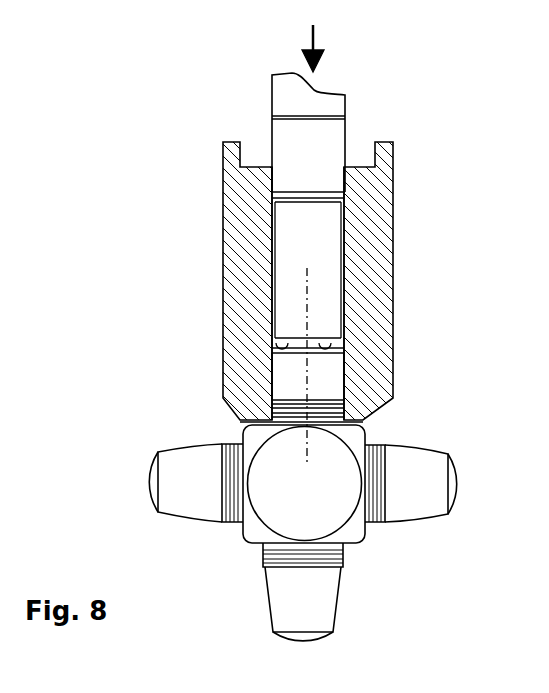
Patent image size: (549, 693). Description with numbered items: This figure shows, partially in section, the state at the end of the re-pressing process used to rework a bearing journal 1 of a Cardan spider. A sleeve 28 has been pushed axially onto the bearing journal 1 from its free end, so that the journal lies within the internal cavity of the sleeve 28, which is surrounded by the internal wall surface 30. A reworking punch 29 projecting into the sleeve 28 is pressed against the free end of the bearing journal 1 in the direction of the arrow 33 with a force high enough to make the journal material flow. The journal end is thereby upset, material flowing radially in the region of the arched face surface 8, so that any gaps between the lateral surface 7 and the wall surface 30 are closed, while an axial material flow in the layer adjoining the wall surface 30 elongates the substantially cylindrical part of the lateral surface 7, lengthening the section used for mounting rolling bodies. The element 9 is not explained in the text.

The bearing journal 1 is at (328, 371).
The lateral surface 7 is at (268, 368).
The arched face surface 8 is at (342, 342).
The sleeve insert 9 is at (308, 296).
The sleeve 28 is at (375, 215).
The reworking punch 29 is at (330, 145).
The internal wall surface 30 is at (328, 384).
The arrow 33 is at (318, 53).